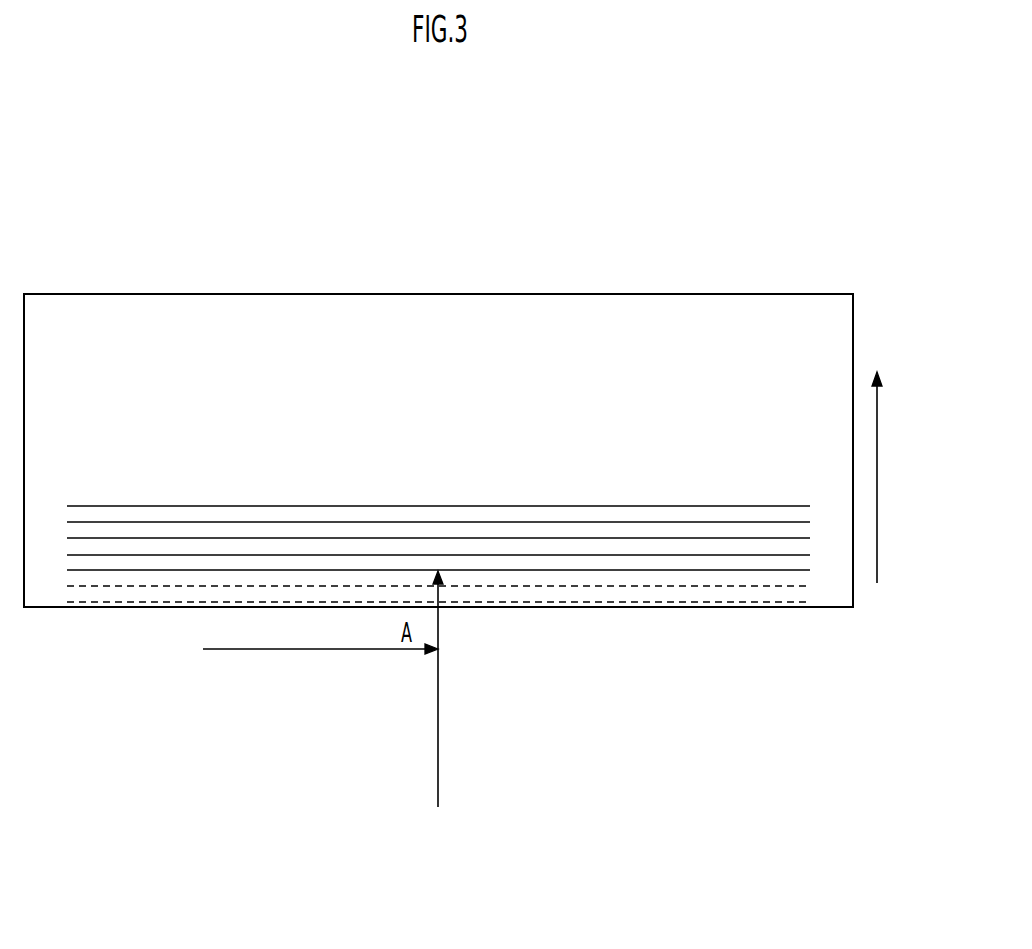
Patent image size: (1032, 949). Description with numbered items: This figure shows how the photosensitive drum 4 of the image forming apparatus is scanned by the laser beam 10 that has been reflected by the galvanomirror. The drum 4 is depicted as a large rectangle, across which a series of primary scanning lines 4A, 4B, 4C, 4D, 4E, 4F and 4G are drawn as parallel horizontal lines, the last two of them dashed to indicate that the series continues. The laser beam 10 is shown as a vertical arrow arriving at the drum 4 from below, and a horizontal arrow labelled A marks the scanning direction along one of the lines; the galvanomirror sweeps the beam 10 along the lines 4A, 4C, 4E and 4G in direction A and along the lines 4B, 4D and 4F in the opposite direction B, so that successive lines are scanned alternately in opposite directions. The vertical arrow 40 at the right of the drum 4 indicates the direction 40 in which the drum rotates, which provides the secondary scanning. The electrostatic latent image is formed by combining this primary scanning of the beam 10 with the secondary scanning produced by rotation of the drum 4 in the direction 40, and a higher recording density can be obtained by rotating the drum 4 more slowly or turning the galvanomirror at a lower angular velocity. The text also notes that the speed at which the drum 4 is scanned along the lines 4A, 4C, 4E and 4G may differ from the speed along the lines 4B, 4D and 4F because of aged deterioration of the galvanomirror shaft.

The photosensitive drum 4 is at (645, 294).
The primary scanning line 4A is at (800, 507).
The primary scanning line 4B is at (78, 522).
The primary scanning line 4C is at (800, 539).
The primary scanning line 4D is at (78, 555).
The primary scanning line 4E is at (798, 571).
The primary scanning line 4F is at (78, 586).
The primary scanning line 4G is at (798, 603).
The laser beam 10 is at (440, 690).
The rotation direction of the drum 40 is at (880, 479).